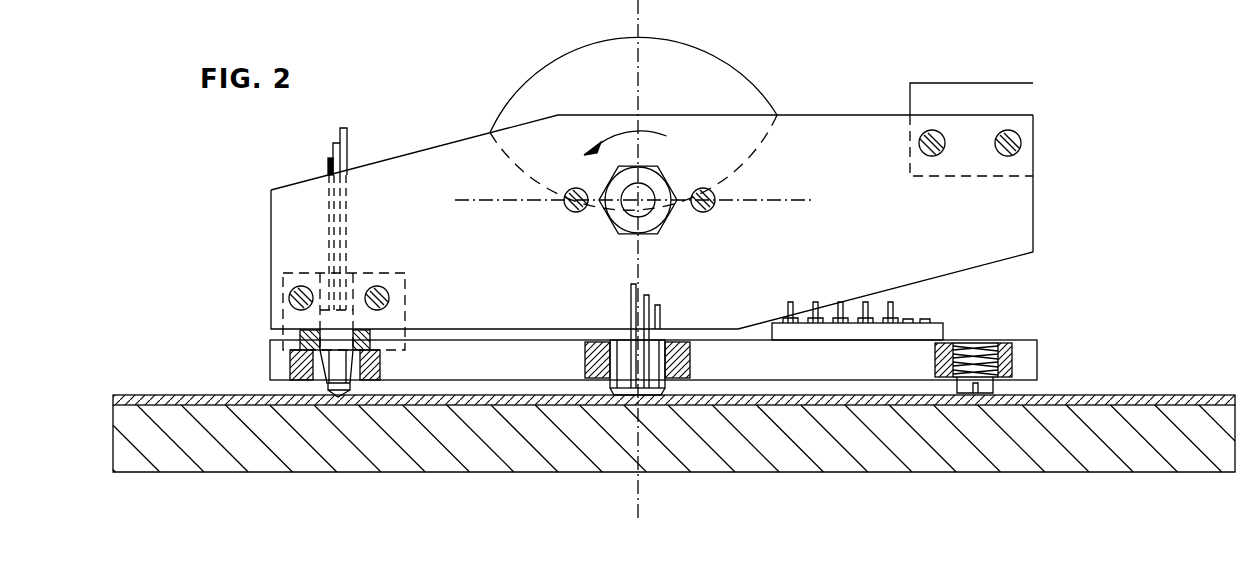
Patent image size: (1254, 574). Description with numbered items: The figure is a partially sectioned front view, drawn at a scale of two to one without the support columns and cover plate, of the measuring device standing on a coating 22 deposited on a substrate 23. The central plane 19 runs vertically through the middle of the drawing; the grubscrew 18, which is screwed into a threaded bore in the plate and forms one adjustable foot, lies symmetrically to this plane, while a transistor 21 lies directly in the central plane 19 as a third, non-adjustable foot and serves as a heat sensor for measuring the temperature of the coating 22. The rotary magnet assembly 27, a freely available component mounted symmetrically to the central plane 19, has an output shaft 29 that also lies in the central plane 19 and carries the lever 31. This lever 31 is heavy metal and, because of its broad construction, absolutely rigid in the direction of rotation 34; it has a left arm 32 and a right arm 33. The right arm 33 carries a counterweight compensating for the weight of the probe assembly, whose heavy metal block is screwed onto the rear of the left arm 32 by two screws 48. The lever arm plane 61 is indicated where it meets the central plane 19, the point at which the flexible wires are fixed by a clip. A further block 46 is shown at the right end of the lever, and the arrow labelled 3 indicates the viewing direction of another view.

The view direction arrow (FIG. 3 section) 3 is at (113, 297).
The grubscrew 18 is at (985, 345).
The central plane 19 is at (641, 85).
The transistor 21 is at (655, 378).
The coating 22 is at (1170, 394).
The substrate 23 is at (1180, 455).
The rotary magnet assembly 27 is at (765, 93).
The output shaft 29 is at (647, 208).
The lever 31 is at (451, 143).
The left arm 32 is at (382, 214).
The right arm 33 is at (872, 210).
The direction of rotation 34 is at (614, 128).
The clamping block 46 is at (1022, 102).
The screws 48 is at (369, 292).
The lever arm plane 61 is at (518, 200).